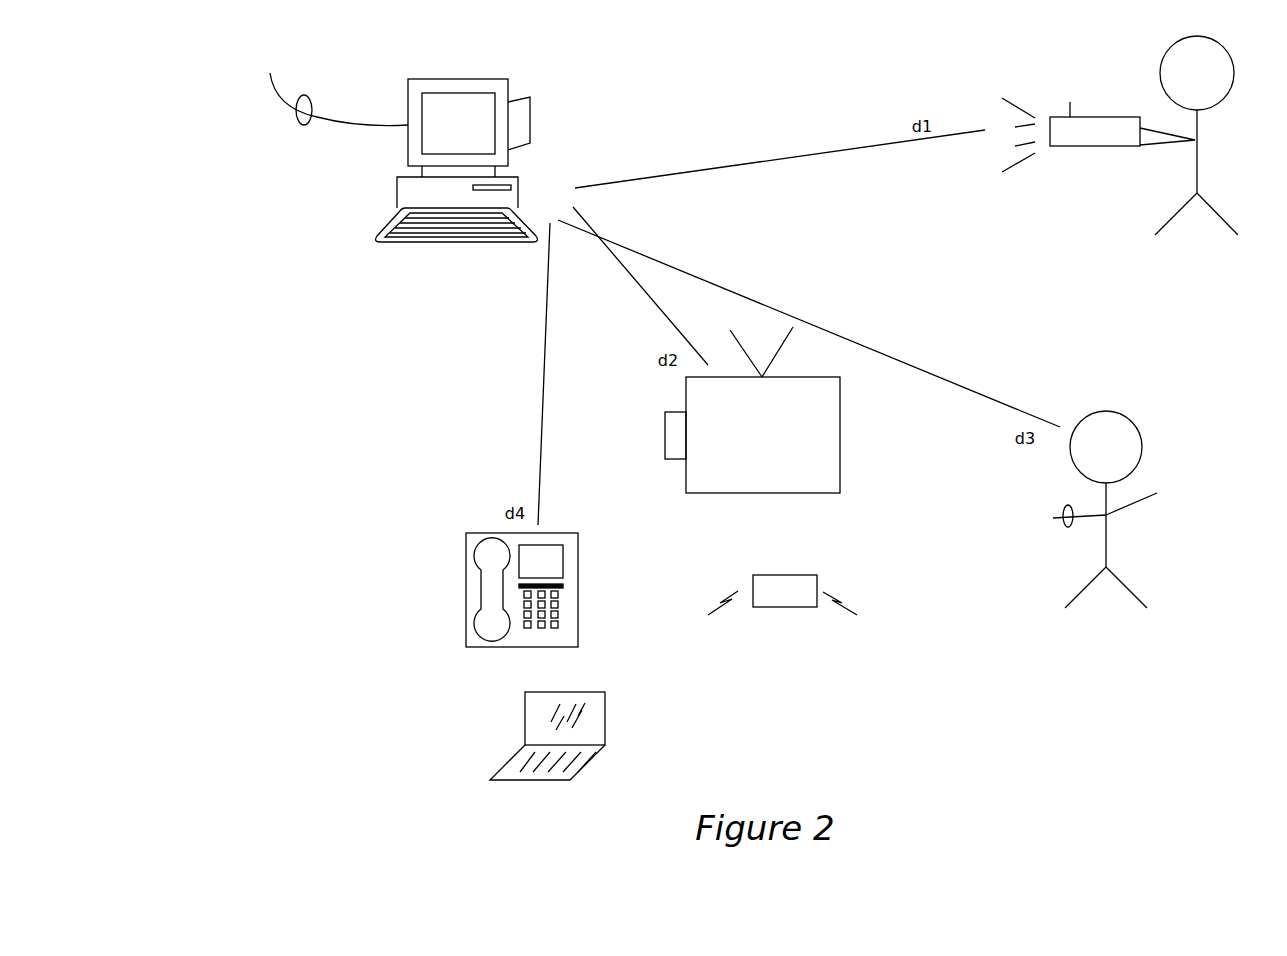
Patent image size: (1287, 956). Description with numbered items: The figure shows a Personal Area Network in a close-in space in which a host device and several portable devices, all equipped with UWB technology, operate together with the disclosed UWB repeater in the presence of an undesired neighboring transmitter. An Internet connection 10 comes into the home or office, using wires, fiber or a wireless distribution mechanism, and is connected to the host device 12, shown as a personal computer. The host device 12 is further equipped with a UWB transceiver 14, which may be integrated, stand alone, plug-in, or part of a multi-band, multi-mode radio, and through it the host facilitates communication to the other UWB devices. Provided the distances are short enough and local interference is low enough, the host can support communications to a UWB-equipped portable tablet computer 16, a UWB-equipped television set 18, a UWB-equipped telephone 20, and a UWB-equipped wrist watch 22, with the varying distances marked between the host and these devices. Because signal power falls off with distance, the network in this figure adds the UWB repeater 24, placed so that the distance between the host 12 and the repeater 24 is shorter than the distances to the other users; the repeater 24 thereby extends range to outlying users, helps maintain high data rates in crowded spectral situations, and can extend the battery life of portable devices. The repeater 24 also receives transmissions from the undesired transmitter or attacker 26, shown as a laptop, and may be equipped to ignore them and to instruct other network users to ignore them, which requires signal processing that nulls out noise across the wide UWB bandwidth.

The Internet connection 10 is at (297, 126).
The host device 12 is at (454, 331).
The UWB transceiver 14 is at (532, 100).
The UWB-equipped portable tablet computer 16 is at (1185, 341).
The UWB-equipped television set 18 is at (668, 462).
The UWB-equipped telephone 20 is at (463, 589).
The UWB-equipped wrist watch 22 is at (1062, 528).
The UWB repeater 24 is at (797, 689).
The undesired transmitter or attacker 26 is at (728, 786).